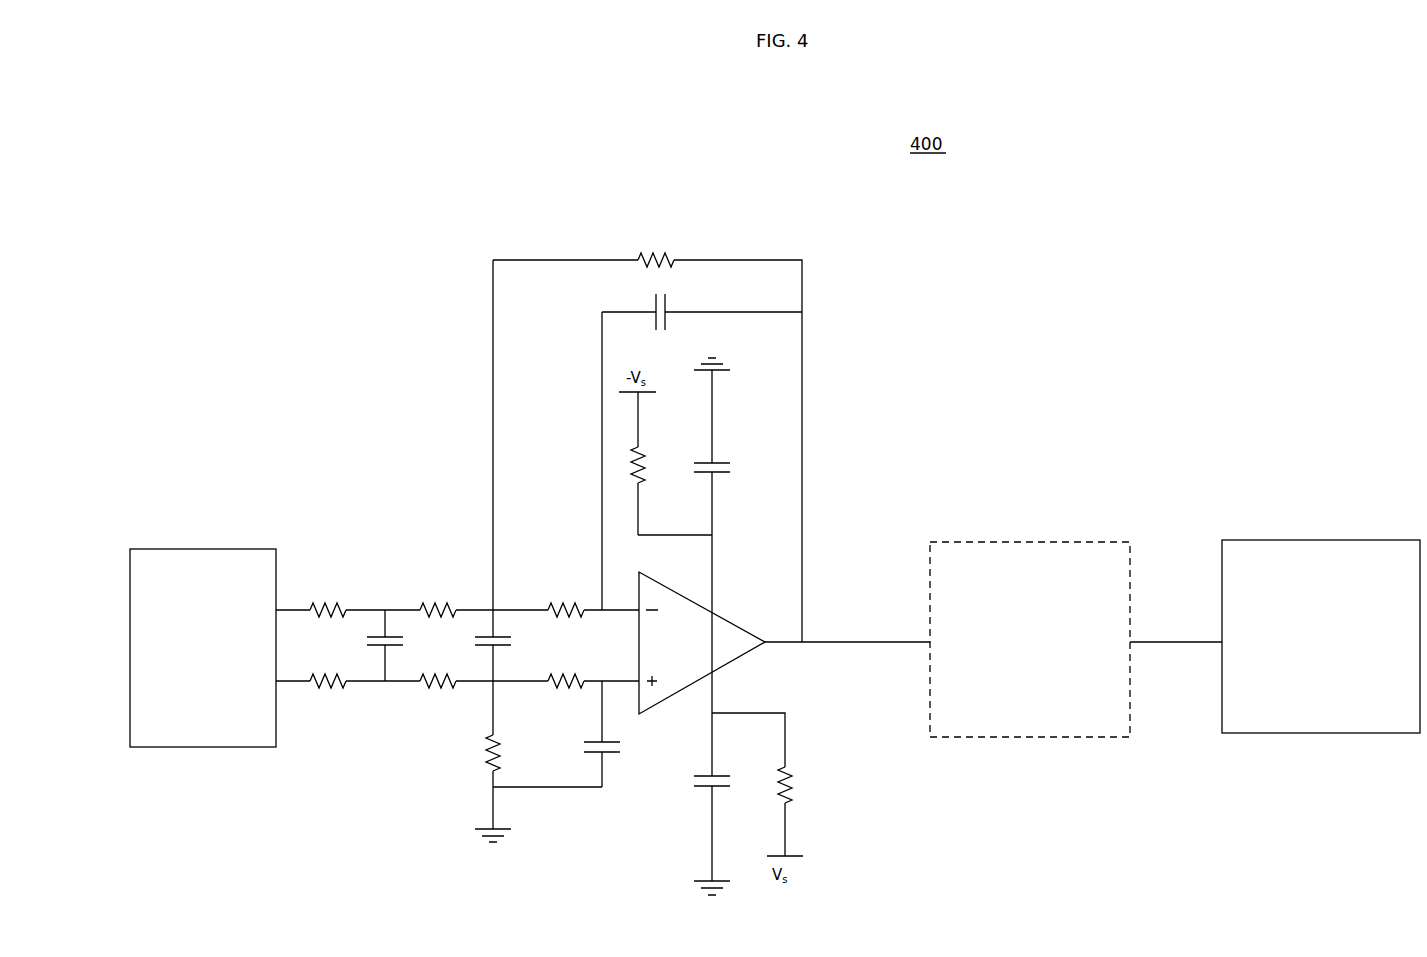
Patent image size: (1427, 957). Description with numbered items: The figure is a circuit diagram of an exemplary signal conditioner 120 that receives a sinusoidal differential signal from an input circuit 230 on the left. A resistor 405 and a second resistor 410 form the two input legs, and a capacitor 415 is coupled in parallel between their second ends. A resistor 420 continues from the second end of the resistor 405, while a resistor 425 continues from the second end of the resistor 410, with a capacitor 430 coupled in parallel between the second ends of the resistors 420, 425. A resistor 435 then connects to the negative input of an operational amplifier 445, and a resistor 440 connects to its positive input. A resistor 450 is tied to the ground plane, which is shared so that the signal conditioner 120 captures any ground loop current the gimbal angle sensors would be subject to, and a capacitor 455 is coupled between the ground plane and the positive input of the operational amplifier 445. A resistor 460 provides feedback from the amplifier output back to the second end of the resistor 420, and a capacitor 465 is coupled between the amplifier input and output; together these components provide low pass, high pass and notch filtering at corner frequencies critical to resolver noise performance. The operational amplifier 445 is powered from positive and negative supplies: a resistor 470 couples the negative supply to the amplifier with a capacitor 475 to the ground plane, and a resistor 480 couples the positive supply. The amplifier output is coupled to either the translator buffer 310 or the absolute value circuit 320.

The signal conditioner 120 is at (346, 232).
The input circuit 230 is at (178, 549).
The translator buffer 310 is at (1040, 542).
The absolute value circuit 320 is at (1330, 540).
The resistor 405 is at (340, 610).
The second resistor 410 is at (343, 686).
The capacitor 415 is at (378, 647).
The resistor 420 is at (440, 607).
The resistor 425 is at (445, 686).
The capacitor 430 is at (486, 647).
The resistor 435 is at (565, 606).
The resistor 440 is at (570, 685).
The operational amplifier 445 is at (730, 622).
The resistor 450 is at (490, 759).
The capacitor 455 is at (608, 753).
The resistor 460 is at (652, 258).
The capacitor 465 is at (668, 310).
The resistor 470 is at (645, 470).
The capacitor 475 is at (718, 478).
The resistor 480 is at (700, 787).